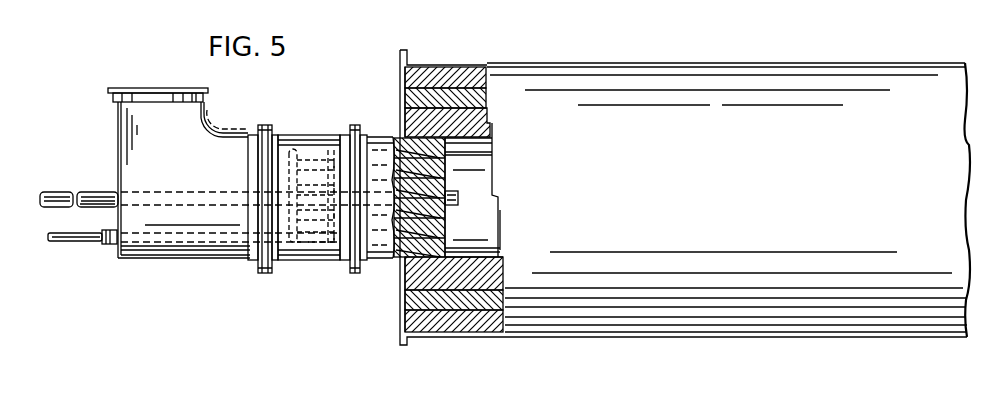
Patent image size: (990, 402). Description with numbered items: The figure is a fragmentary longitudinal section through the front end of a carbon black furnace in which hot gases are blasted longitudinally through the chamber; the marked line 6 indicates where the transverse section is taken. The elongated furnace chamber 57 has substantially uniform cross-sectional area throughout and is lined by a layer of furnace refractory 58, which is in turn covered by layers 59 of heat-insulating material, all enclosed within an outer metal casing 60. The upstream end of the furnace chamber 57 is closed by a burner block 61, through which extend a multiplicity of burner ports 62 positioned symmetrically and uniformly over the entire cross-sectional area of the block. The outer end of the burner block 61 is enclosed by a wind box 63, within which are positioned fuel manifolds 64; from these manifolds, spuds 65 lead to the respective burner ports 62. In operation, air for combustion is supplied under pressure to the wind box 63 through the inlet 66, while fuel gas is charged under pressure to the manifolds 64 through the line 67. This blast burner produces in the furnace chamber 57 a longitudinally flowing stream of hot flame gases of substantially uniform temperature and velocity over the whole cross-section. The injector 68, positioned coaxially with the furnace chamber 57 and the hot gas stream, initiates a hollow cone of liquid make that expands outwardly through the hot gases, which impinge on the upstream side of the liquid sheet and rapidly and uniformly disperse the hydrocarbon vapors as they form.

The section line 6- 6 is at (475, 60).
The furnace chamber 57 is at (492, 226).
The furnace refractory 58 is at (405, 273).
The heat-insulating material 59 is at (405, 307).
The outer metal casing 60 is at (490, 334).
The burner block 61 is at (396, 137).
The burner ports 62 is at (448, 160).
The wind box 63 is at (320, 255).
The fuel manifolds 64 is at (290, 137).
The spuds 65 is at (328, 150).
The inlet 66 is at (180, 90).
The line 67 is at (126, 258).
The injector 68 is at (70, 195).